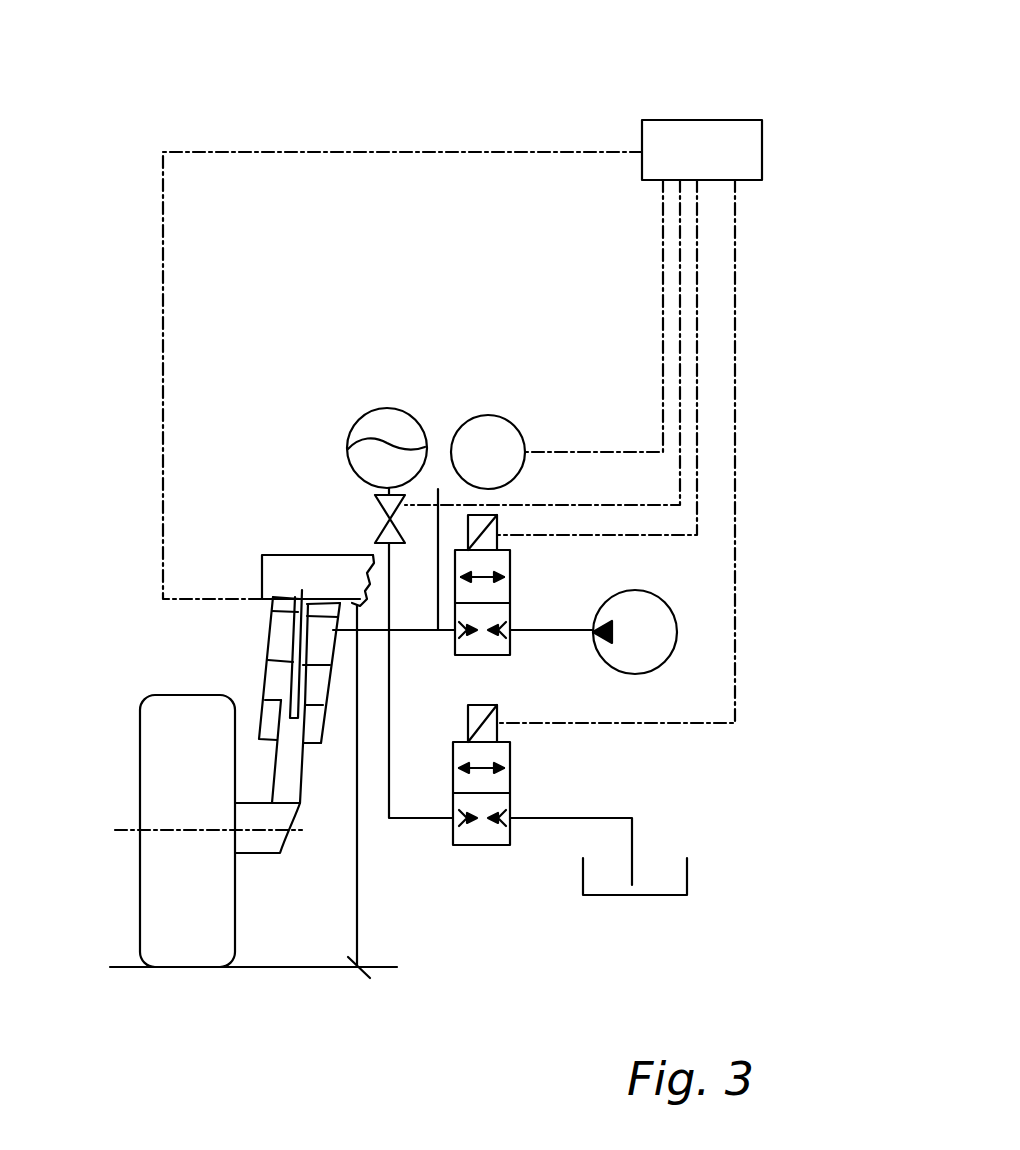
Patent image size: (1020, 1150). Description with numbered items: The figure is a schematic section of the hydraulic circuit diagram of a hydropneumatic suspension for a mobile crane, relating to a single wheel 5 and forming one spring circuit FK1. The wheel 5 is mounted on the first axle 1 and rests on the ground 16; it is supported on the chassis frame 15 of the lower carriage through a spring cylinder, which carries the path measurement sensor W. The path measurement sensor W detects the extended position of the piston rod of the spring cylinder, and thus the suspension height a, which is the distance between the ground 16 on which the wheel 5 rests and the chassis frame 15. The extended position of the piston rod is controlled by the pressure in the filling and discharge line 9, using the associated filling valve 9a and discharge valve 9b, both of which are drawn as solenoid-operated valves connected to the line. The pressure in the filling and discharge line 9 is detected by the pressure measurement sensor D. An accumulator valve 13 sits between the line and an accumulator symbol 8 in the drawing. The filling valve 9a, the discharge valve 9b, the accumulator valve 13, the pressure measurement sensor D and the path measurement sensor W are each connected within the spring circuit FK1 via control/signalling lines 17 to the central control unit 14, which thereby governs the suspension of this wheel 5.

The first axle 1 is at (254, 842).
The wheel 5 is at (172, 880).
The pressure accumulator / gauge 8 is at (350, 440).
The filling and discharge line 9 is at (422, 810).
The filling valve 9a is at (497, 590).
The discharge valve 9b is at (478, 832).
The accumulator valve 13 is at (397, 511).
The central control unit 14 is at (727, 143).
The chassis frame 15 is at (280, 577).
The ground 16 is at (118, 968).
The control/signalling lines 17 is at (493, 152).
The path measurement sensor W is at (298, 645).
The pressure measurement sensor D is at (510, 440).
The suspension height a is at (349, 791).
The spring circuit FK1 is at (407, 62).